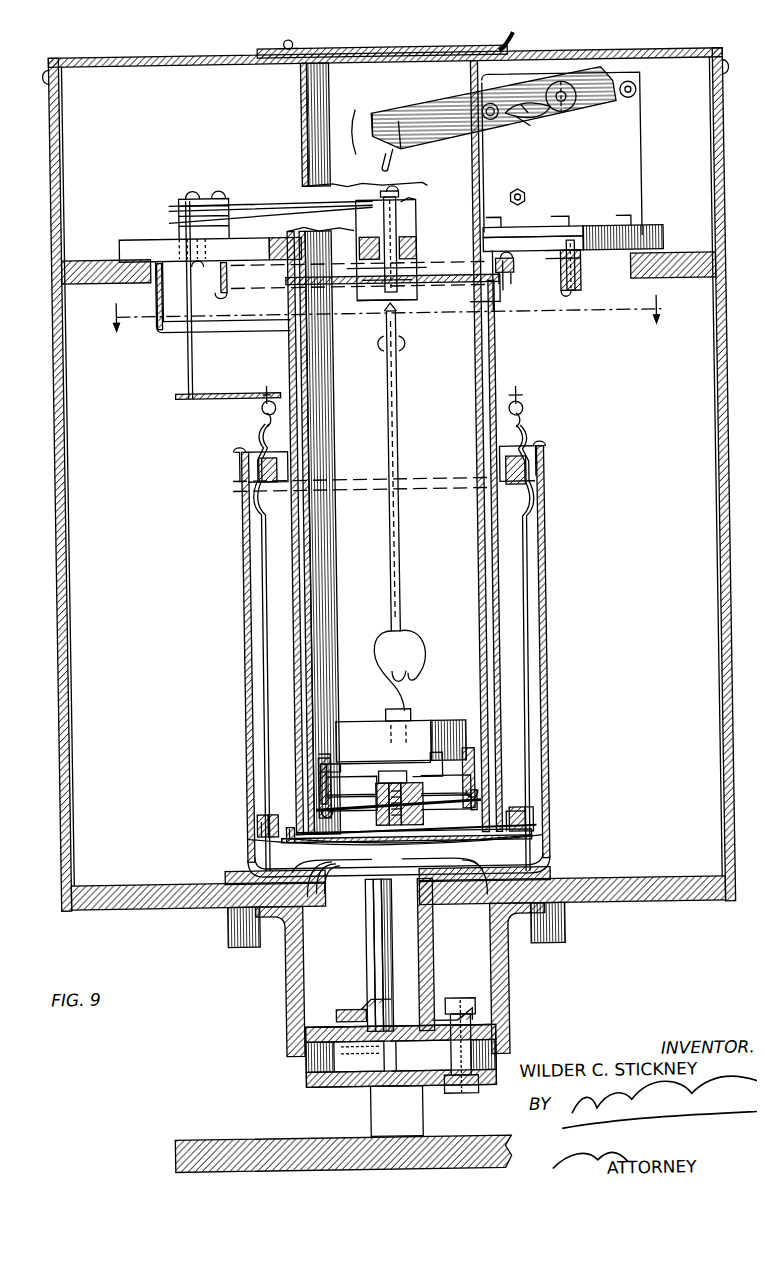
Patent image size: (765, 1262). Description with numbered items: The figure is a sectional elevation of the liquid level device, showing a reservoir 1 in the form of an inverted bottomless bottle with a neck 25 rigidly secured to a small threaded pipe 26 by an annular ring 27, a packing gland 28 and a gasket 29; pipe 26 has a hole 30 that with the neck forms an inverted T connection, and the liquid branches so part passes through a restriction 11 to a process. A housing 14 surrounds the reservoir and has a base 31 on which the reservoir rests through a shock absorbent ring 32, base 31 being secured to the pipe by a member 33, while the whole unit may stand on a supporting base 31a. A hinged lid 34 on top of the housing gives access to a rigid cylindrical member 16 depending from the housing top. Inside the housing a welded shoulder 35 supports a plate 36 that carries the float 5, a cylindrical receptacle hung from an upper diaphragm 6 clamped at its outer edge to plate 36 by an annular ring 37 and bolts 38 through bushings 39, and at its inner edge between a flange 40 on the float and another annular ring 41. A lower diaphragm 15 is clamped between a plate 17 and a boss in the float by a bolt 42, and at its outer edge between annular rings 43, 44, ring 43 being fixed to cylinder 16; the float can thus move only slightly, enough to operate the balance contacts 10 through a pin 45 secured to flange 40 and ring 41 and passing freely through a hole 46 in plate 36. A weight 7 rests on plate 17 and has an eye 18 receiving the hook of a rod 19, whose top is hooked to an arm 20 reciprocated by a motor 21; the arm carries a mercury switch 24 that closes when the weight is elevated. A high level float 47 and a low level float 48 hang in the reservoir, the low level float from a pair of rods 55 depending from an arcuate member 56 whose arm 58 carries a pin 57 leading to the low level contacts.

The reservoir 1 is at (241, 737).
The float 5 is at (496, 346).
The diaphragm 6 is at (578, 297).
The weight 7 is at (432, 725).
The balance contacts 10 is at (272, 208).
The restriction 11 is at (390, 375).
The housing 14 is at (54, 688).
The diaphragm 15 is at (434, 809).
The rigid cylindrical member 16 is at (306, 92).
The plate 17 is at (454, 727).
The eye 18 is at (412, 656).
The rod 19 is at (398, 534).
The arm 20 is at (436, 118).
The motor 21 is at (637, 168).
The mercury switch 24 is at (545, 120).
The neck 25 is at (426, 926).
The threaded pipe 26 is at (402, 1080).
The annular ring 27 is at (340, 1005).
The packing gland 28 is at (432, 1006).
The gasket 29 is at (359, 1056).
The hole 30 is at (396, 1036).
The base 31 is at (209, 885).
The supporting base 31a is at (250, 1143).
The shock absorbent ring 32 is at (534, 877).
The member 33 is at (402, 1000).
The hinged lid 34 is at (507, 37).
The shoulder 35 is at (88, 278).
The plate 36 is at (666, 238).
The annular ring 37 is at (583, 293).
The bolts 38 is at (573, 299).
The bushings 39 is at (585, 265).
The flange 40 is at (508, 288).
The annular ring 41 is at (518, 272).
The bolt 42 is at (381, 768).
The annular ring 43 is at (476, 798).
The annular ring 44 is at (487, 809).
The pin 45 is at (416, 231).
The hole 46 is at (382, 239).
The high level float 47 is at (527, 471).
The low level float 48 is at (525, 819).
The rods 55 is at (259, 631).
The arcuate member 56 is at (256, 392).
The pin 57 is at (188, 350).
The arm 58 is at (213, 396).